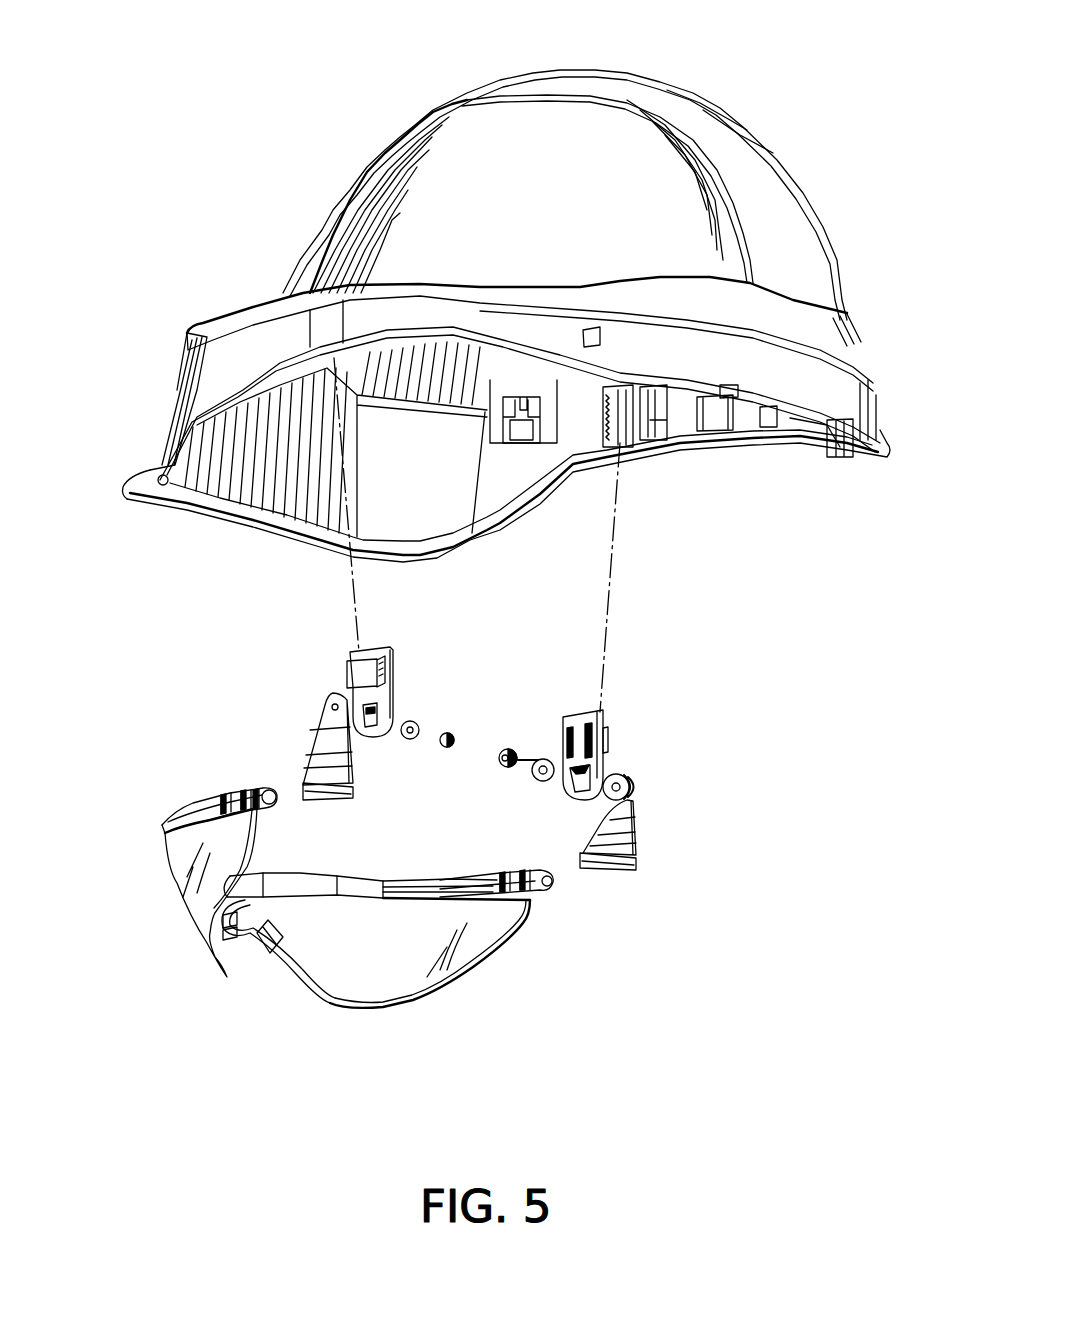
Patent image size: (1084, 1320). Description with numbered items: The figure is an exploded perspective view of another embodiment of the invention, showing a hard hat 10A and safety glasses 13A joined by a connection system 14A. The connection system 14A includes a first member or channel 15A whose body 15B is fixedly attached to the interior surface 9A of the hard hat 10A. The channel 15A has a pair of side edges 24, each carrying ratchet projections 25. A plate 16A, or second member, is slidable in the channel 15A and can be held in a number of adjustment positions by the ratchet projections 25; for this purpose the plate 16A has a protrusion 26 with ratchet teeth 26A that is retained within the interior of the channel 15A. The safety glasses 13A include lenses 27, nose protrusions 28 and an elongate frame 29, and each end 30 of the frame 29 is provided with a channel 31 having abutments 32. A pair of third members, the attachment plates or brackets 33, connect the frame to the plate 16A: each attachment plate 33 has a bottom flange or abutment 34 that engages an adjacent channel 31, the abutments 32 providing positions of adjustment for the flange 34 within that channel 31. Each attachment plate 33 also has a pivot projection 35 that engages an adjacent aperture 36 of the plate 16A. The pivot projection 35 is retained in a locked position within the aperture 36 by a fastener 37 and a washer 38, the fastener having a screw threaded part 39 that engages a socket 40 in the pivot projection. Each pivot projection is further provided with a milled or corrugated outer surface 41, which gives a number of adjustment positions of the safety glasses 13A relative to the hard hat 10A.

The hard hat 10A is at (266, 77).
The ratchet projections 25 is at (592, 333).
The body 15B is at (727, 382).
The side edges 24 is at (603, 428).
The channel 15A is at (623, 440).
The interior surface 9A is at (810, 427).
The connection system 14A is at (299, 646).
The ratchet teeth 26A is at (378, 653).
The plate 16A is at (605, 713).
The protrusion 26 is at (378, 681).
The aperture 36 is at (580, 787).
The attachment plates 33 is at (320, 742).
The bottom flange 34 is at (327, 792).
The fastener 37 is at (503, 751).
The screw threaded part 39 is at (523, 757).
The washer 38 is at (547, 782).
The pivot projection 35 is at (636, 780).
The socket 40 is at (632, 786).
The milled or corrugated outer surface 41 is at (632, 797).
The end 30 is at (199, 789).
The abutments 32 is at (246, 797).
The channel 31 is at (278, 803).
The lenses 27 is at (413, 964).
The elongate frame 29 is at (365, 888).
The nose protrusions 28 is at (268, 937).
The safety glasses 13A is at (159, 938).